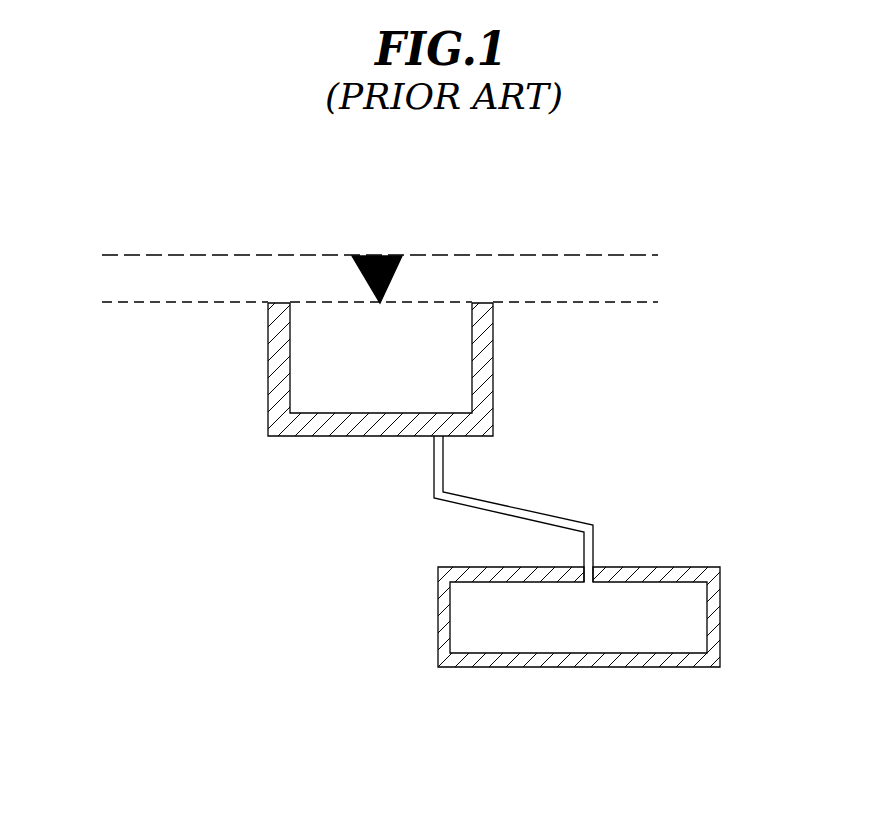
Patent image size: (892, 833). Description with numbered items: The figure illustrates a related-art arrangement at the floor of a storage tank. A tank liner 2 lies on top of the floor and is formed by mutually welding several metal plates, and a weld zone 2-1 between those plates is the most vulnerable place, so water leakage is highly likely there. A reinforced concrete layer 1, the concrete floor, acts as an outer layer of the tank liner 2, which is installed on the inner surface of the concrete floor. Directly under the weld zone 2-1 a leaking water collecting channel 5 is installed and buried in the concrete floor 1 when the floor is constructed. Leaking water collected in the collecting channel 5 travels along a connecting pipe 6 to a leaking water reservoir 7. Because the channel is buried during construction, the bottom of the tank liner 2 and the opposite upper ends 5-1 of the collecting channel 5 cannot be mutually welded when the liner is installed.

The reinforced concrete layer 1 is at (183, 310).
The tank liner 2 is at (595, 275).
The weld zone 2-1 is at (380, 255).
The leaking water collecting channel 5 is at (493, 363).
The opposite upper ends 5-1 is at (286, 305).
The connecting pipe 6 is at (543, 510).
The leaking water reservoir 7 is at (638, 667).